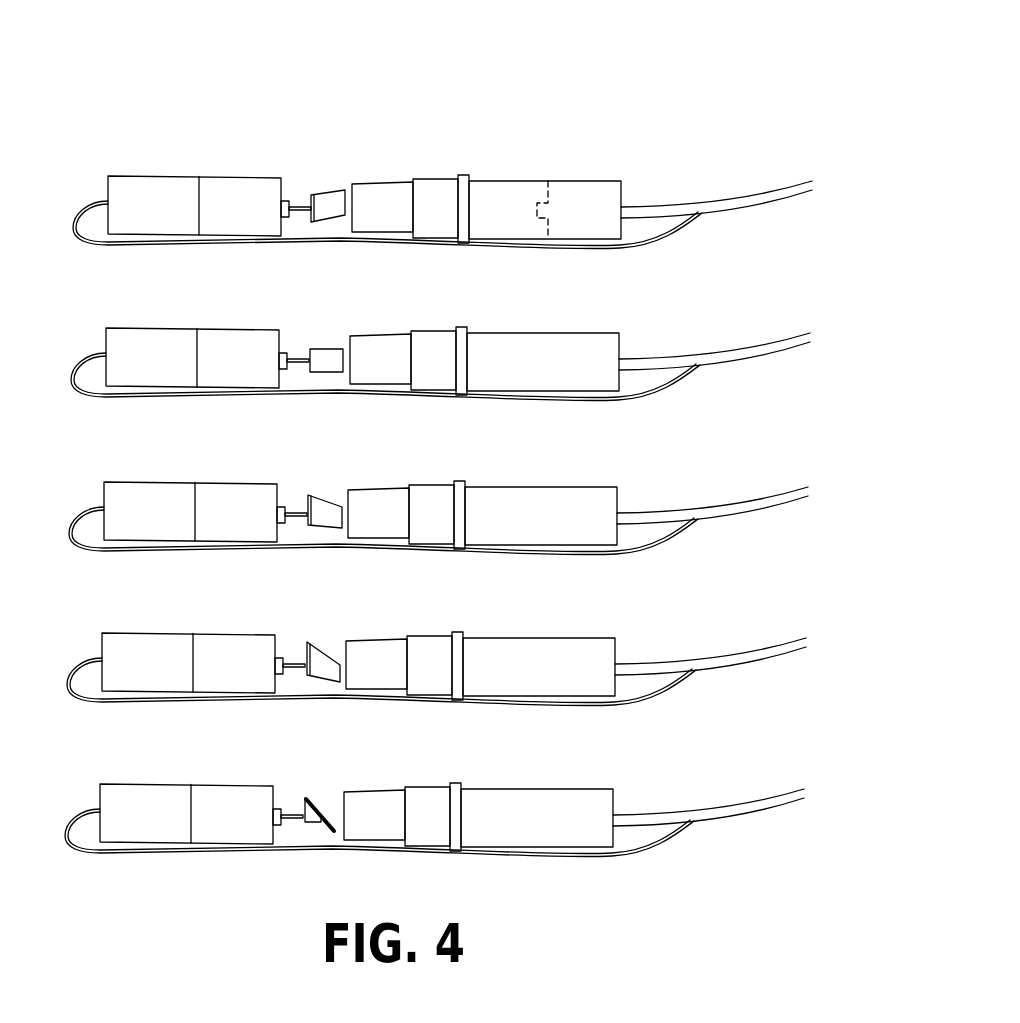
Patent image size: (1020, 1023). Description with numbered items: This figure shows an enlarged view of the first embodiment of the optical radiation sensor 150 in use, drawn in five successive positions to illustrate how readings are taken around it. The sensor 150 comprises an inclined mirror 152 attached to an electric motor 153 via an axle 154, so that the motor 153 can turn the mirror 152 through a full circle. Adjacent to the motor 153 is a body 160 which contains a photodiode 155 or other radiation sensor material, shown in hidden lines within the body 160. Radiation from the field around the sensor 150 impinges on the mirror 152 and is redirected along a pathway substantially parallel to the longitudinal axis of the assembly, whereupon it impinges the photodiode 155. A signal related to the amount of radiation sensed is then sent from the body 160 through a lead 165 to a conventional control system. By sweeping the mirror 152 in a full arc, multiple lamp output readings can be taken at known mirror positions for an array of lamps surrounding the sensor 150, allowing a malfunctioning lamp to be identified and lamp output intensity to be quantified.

The optical radiation sensor 150 is at (447, 183).
The inclined mirror 152 is at (327, 192).
The electric motor 153 is at (232, 211).
The axle 154 is at (304, 211).
The photodiode 155 is at (557, 192).
The body 160 is at (487, 200).
The lead 165 is at (743, 197).